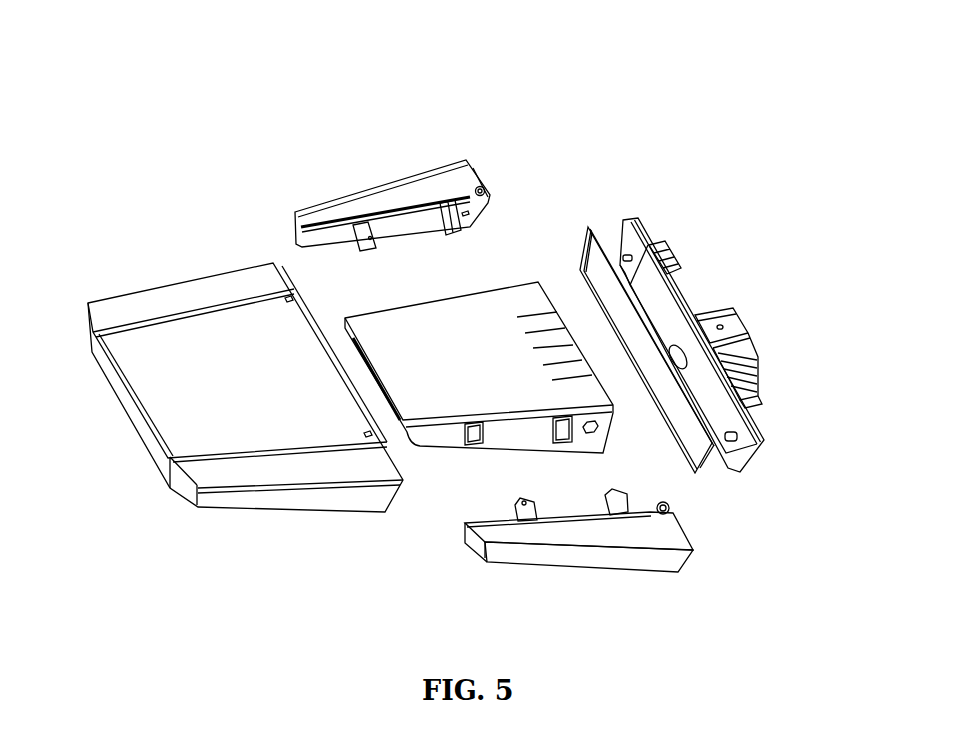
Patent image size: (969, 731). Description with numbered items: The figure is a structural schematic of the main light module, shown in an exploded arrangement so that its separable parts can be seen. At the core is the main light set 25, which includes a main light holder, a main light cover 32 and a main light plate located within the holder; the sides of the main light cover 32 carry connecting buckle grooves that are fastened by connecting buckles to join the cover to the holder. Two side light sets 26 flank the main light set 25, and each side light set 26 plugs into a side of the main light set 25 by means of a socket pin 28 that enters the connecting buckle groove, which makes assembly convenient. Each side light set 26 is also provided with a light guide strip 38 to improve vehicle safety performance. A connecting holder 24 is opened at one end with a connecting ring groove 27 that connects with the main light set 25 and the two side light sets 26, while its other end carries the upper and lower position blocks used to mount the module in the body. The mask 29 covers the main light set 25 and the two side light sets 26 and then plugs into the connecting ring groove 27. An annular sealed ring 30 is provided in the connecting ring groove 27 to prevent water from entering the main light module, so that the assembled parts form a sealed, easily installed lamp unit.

The connecting holder 24 is at (743, 298).
The main light set 25 is at (405, 325).
The side light set 26 is at (562, 301).
The connecting ring groove 27 is at (643, 296).
The socket pin 28 is at (428, 356).
The mask 29 is at (245, 430).
The annular sealed ring 30 is at (604, 325).
The main light cover 32 is at (561, 719).
The light guide strip 38 is at (641, 603).